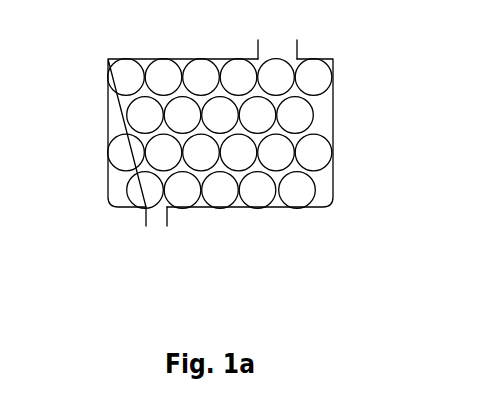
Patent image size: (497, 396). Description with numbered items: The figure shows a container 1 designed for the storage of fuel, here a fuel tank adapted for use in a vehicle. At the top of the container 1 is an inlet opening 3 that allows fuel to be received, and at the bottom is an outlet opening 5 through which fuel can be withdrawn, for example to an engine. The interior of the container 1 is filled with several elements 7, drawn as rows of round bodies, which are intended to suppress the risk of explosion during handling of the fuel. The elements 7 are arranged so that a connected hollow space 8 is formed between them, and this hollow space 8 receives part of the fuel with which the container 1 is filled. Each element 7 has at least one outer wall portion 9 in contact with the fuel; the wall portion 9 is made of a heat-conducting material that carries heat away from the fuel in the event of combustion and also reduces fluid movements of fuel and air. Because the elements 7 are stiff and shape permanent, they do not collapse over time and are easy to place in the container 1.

The container 1 is at (116, 60).
The inlet opening 3 is at (280, 47).
The outlet opening 5 is at (162, 215).
The element 7 is at (185, 193).
The connected hollow space 8 is at (320, 115).
The outer wall portion 9 is at (318, 188).